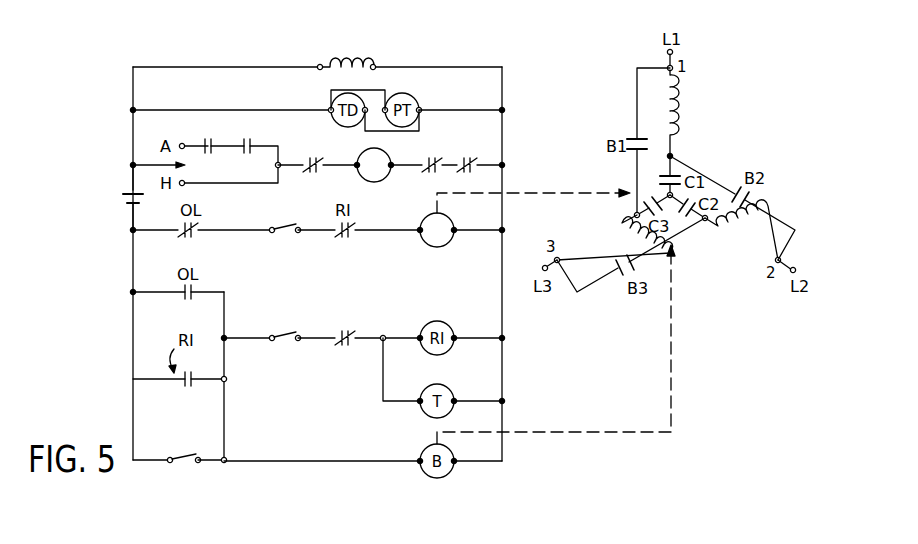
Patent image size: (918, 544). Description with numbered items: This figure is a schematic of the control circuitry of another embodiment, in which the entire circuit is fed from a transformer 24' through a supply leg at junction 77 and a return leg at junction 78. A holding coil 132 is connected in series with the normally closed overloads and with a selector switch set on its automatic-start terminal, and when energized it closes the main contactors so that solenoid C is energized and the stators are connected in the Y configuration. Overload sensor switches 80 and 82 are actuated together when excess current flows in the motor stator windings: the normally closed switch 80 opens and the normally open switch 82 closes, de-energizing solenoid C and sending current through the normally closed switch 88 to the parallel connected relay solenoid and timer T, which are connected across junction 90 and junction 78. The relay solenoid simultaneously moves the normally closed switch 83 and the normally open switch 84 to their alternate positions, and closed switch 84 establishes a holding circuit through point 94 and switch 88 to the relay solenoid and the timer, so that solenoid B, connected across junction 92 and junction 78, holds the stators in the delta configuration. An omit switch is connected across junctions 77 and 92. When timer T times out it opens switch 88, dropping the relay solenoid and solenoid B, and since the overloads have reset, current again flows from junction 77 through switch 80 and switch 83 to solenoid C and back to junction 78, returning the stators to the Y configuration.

The transformer 24' is at (328, 76).
The holding coil 132 is at (388, 153).
The junction 77 is at (131, 231).
The junction 78 is at (504, 230).
The overload sensor switch 80 is at (184, 226).
The overload sensor switch 82 is at (184, 300).
The N.C. switch 83 is at (340, 225).
The N.O. switch 84 is at (183, 386).
The N.C. switch 88 is at (340, 333).
The junction 90 is at (385, 335).
The junction 92 is at (226, 458).
The junction 94 is at (226, 336).